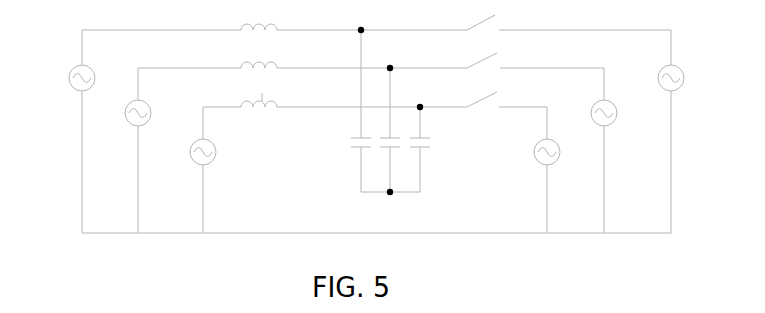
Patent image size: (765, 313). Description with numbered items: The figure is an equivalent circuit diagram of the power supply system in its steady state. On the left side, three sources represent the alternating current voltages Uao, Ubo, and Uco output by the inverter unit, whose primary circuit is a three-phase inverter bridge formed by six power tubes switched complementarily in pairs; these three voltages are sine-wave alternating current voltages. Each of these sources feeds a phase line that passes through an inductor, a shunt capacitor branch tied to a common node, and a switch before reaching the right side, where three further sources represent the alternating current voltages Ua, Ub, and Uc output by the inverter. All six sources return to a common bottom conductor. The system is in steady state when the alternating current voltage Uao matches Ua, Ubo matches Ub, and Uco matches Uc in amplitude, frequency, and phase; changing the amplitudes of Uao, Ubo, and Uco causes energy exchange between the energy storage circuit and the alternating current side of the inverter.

The alternating current voltage Uao is at (59, 131).
The alternating current voltage Ubo is at (119, 150).
The alternating current voltage Uco is at (180, 170).
The alternating current voltage Ua is at (653, 131).
The alternating current voltage Ub is at (586, 150).
The alternating current voltage Uc is at (529, 170).